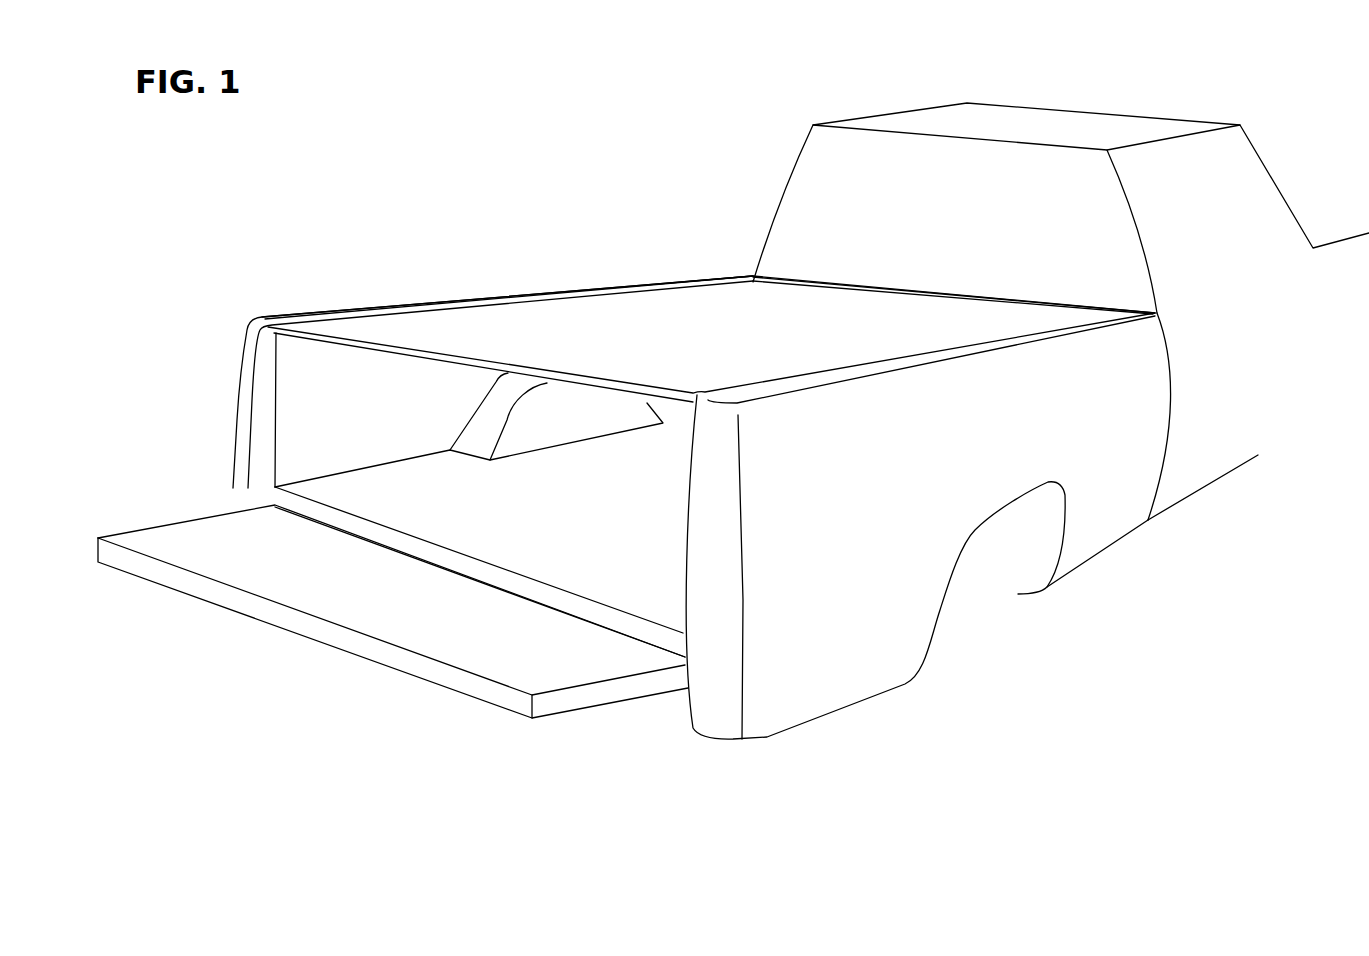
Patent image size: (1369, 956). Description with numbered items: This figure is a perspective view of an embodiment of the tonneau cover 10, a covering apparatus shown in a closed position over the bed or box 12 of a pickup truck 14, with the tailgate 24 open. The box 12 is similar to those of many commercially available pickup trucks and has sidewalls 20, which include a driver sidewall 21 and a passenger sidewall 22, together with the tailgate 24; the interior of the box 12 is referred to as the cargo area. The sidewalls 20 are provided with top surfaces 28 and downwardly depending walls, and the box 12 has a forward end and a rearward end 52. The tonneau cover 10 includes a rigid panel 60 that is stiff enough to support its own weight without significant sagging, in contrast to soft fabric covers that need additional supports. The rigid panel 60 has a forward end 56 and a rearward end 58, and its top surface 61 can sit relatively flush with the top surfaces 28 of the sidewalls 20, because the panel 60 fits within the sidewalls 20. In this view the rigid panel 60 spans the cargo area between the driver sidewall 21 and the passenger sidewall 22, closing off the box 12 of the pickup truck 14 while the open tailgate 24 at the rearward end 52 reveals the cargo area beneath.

The tonneau cover 10 is at (616, 257).
The box 12 is at (593, 534).
The pickup truck 14 is at (1276, 370).
The sidewalls 20 is at (342, 441).
The driver sidewall 21 is at (430, 399).
The passenger sidewall 22 is at (1020, 438).
The tailgate 24 is at (403, 618).
The top surfaces 28 is at (310, 313).
The rearward end 52 is at (557, 588).
The forward end 56 is at (880, 292).
The rearward end 58 is at (390, 345).
The rigid panel 60 is at (869, 343).
The top surface 61 is at (679, 344).